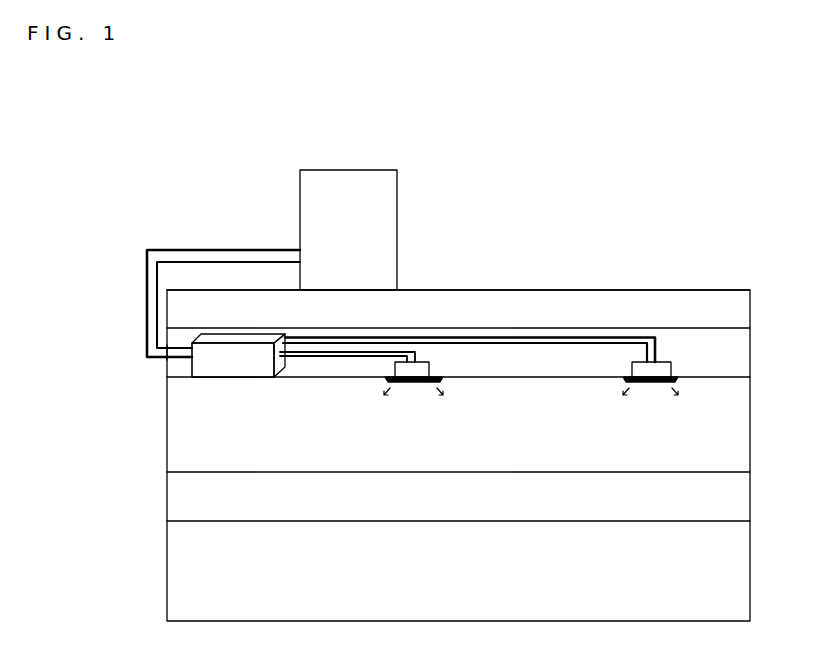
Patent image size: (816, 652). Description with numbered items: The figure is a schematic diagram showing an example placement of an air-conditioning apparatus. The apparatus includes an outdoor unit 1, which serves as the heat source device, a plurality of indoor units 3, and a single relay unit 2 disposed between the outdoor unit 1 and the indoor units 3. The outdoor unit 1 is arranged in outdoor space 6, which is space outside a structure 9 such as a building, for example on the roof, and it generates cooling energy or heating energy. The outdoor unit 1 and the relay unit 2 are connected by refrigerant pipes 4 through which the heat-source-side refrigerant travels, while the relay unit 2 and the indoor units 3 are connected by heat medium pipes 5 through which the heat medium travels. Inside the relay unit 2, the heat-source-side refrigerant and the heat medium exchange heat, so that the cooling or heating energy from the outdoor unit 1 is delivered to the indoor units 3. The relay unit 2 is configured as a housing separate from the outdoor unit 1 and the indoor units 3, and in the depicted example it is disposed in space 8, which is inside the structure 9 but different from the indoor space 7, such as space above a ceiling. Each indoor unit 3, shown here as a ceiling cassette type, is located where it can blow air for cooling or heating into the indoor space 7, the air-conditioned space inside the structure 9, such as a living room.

The outdoor unit 1 is at (397, 212).
The relay unit 2 is at (225, 362).
The indoor unit 3 is at (383, 384).
The refrigerant pipe 4 is at (167, 247).
The heat medium pipe 5 is at (488, 337).
The outdoor space 6 is at (632, 197).
The indoor space 7 is at (697, 432).
The space 8 is at (180, 366).
The structure 9 is at (707, 291).